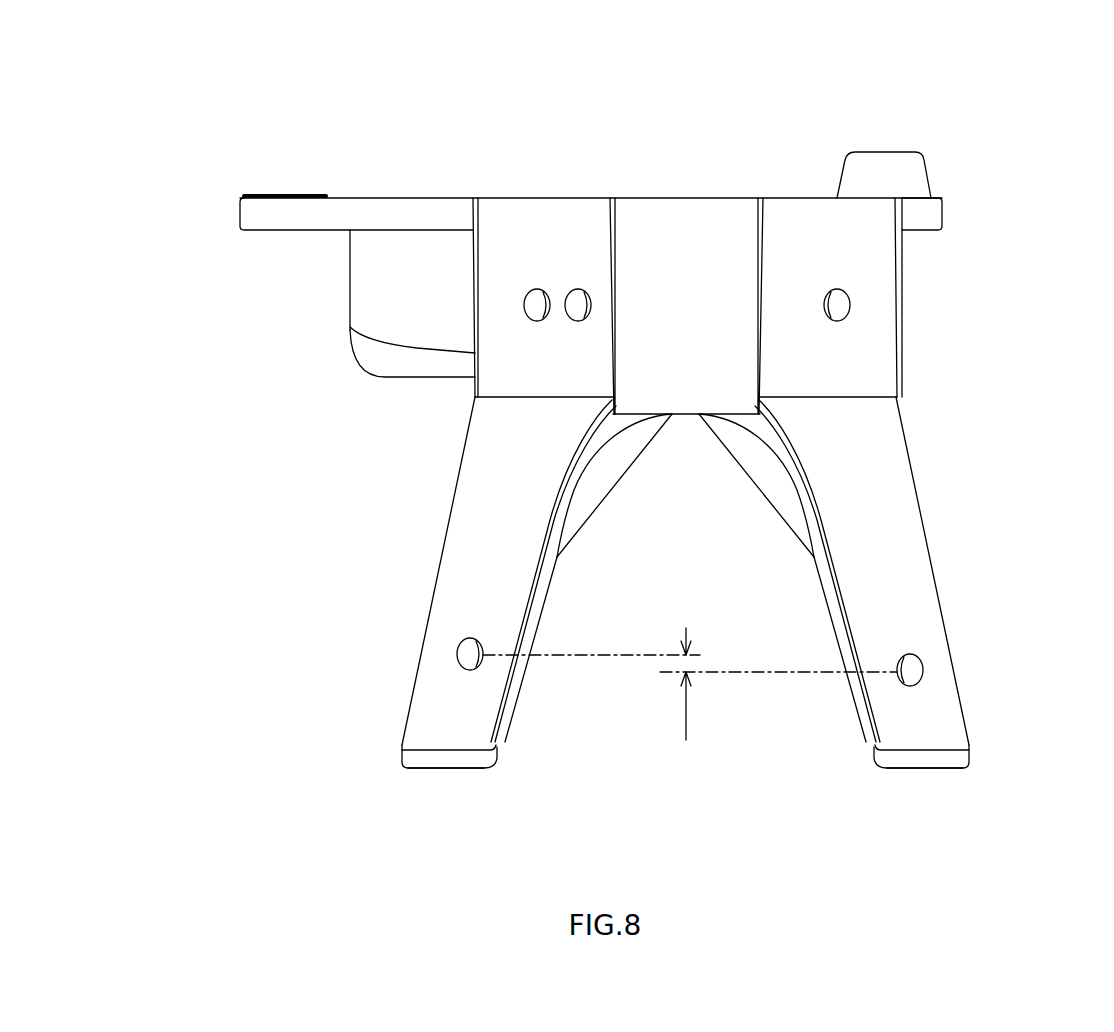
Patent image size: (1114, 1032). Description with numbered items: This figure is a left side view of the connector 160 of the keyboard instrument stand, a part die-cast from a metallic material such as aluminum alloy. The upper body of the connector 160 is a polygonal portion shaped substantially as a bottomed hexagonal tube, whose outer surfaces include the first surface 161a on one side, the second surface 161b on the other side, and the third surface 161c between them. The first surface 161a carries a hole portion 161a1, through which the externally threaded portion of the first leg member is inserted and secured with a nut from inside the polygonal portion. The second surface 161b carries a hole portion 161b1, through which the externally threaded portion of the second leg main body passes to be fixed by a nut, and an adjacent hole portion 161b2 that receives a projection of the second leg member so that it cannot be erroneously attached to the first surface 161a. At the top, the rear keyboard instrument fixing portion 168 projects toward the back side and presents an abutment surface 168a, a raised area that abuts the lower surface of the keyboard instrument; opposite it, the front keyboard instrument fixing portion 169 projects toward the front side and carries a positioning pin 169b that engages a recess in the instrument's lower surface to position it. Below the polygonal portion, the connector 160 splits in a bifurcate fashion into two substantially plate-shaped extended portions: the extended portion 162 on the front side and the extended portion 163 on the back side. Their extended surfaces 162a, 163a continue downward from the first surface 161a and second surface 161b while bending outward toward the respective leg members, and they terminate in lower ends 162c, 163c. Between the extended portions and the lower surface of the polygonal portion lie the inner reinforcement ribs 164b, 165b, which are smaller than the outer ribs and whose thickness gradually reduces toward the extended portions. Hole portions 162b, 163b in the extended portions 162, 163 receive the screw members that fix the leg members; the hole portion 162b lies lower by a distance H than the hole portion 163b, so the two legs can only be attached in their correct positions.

The connector 160 is at (944, 120).
The rear keyboard instrument fixing portion 168 is at (248, 214).
The abutment surface 168a is at (275, 182).
The front keyboard instrument fixing portion 169 is at (928, 213).
The positioning pin 169b is at (903, 172).
The first surface 161a is at (872, 368).
The hole portion 161a1 is at (839, 303).
The second surface 161b is at (494, 375).
The hole portion 161b1 is at (535, 303).
The hole portion 161b2 is at (578, 300).
The third surface 161c is at (694, 250).
The extended portion 162 is at (940, 589).
The extended surface 162a is at (900, 533).
The hole portion 162b is at (912, 667).
The bottom end of extended portion 162c is at (922, 786).
The extended portion 163 is at (428, 603).
The extended surface 163a is at (466, 524).
The hole portion 163b is at (470, 652).
The bottom end of extended portion 163c is at (441, 786).
The inner reinforcement rib 164b is at (765, 495).
The inner reinforcement rib 165b is at (607, 493).